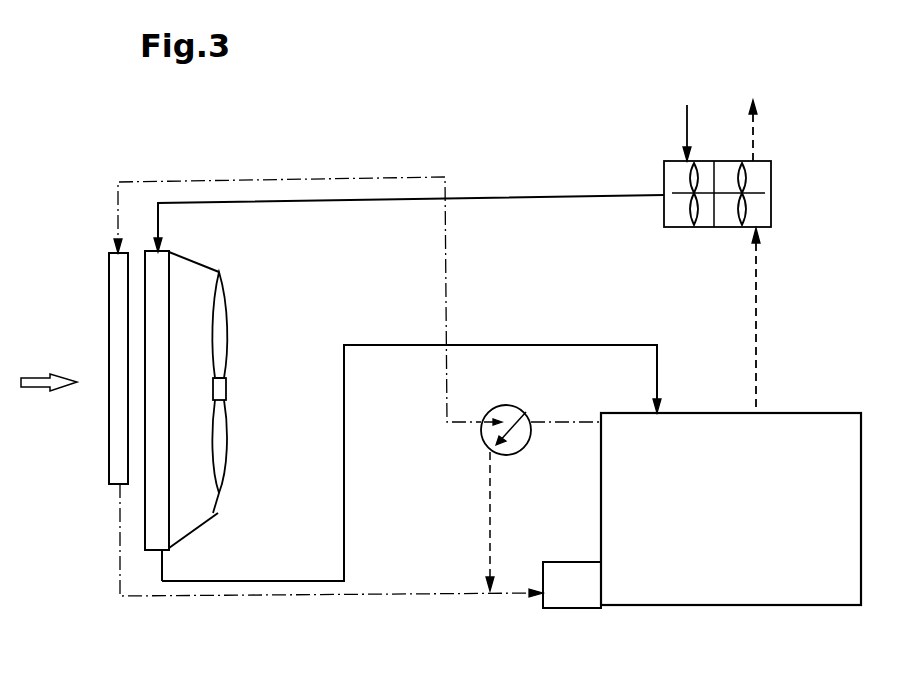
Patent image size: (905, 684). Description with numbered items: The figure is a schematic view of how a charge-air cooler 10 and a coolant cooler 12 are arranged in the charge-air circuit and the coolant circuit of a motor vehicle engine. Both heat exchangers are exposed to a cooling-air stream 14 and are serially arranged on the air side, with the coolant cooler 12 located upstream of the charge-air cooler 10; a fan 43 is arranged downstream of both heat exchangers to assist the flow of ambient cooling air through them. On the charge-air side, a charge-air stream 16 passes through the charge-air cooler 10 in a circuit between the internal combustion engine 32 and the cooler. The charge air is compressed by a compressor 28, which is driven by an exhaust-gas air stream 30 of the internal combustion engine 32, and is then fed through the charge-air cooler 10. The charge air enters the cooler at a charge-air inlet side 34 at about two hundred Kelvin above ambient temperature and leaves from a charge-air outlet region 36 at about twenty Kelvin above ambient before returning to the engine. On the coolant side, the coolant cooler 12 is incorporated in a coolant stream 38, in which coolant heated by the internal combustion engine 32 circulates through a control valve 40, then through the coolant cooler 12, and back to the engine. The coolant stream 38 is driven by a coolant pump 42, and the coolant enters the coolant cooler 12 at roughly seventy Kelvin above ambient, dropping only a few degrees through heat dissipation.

The charge-air cooler 10 is at (149, 262).
The coolant cooler 12 is at (115, 288).
The cooling-air stream 14 is at (30, 389).
The charge-air stream 16 is at (517, 198).
The compressor 28 is at (725, 160).
The exhaust-gas air stream 30 is at (757, 313).
The internal combustion engine 32 is at (820, 593).
The charge-air inlet side 34 is at (163, 251).
The charge-air outlet region 36 is at (158, 553).
The coolant stream 38 is at (196, 598).
The control valve 40 is at (509, 455).
The coolant pump 42 is at (584, 600).
The fan 43 is at (222, 493).